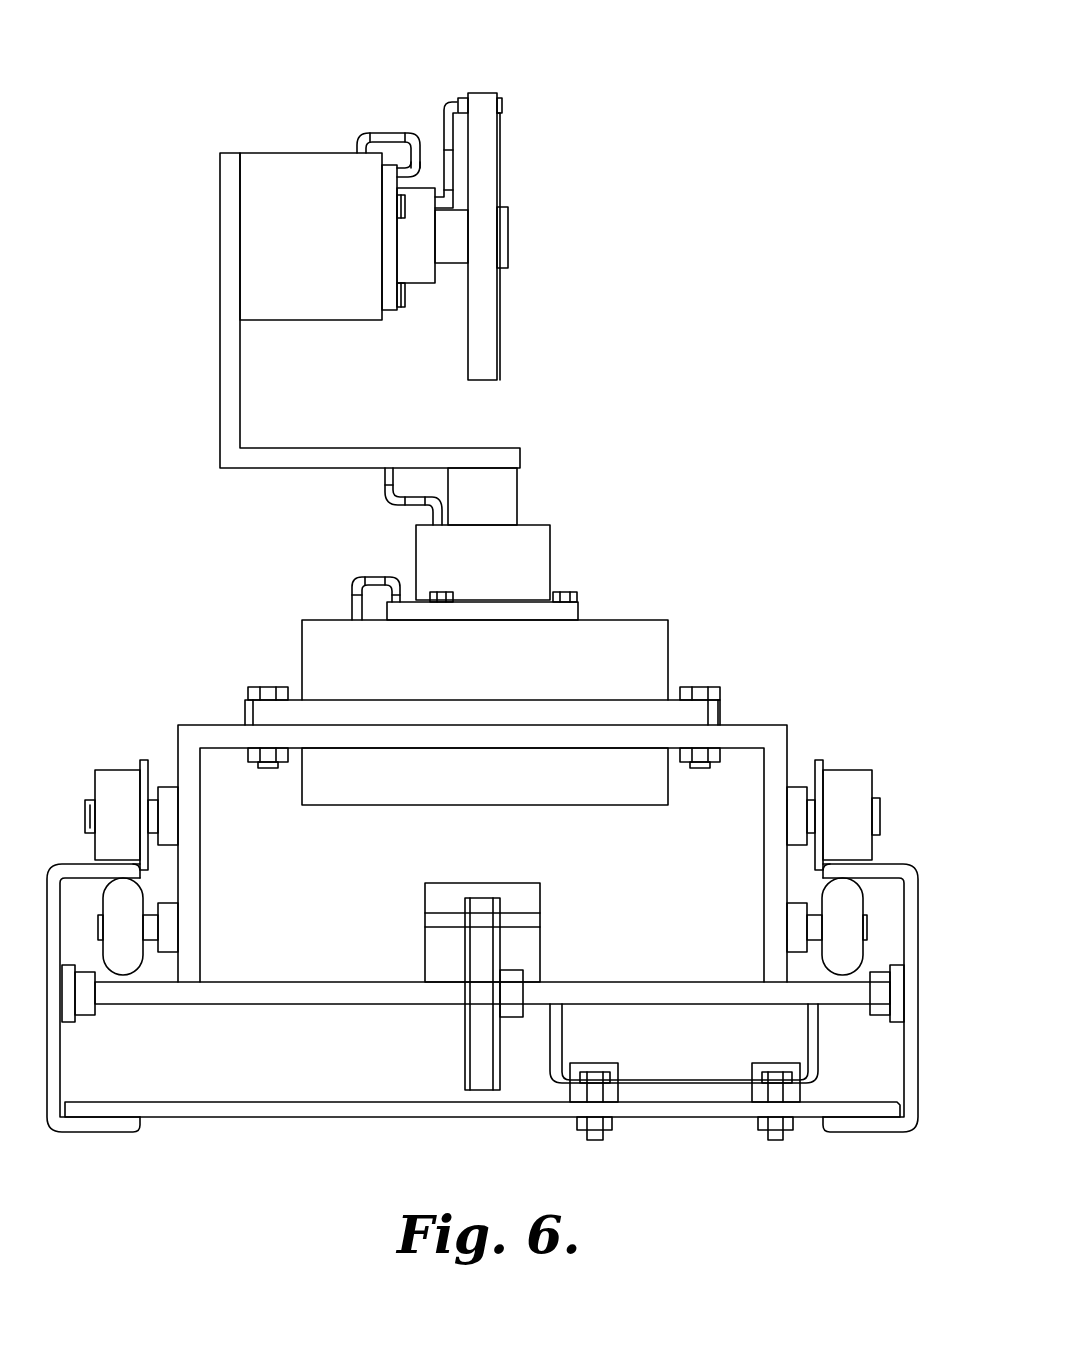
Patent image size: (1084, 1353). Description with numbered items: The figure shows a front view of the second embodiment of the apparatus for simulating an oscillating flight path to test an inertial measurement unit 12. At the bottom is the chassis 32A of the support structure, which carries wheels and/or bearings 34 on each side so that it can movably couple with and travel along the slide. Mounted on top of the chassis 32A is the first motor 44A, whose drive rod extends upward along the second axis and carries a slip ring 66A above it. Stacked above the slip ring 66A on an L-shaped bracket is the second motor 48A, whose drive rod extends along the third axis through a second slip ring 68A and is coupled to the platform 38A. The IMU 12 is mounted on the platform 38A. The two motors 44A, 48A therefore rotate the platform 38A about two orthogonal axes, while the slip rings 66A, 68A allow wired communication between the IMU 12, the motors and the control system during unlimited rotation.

The inertial measurement unit (IMU) 12 is at (507, 240).
The chassis 32A is at (777, 737).
The wheels and/or bearings 34 is at (93, 757).
The platform 38A is at (487, 107).
The first motor 44A is at (640, 640).
The second motor 48A is at (264, 155).
The slip ring 66A is at (540, 543).
The slip ring 68A is at (422, 265).